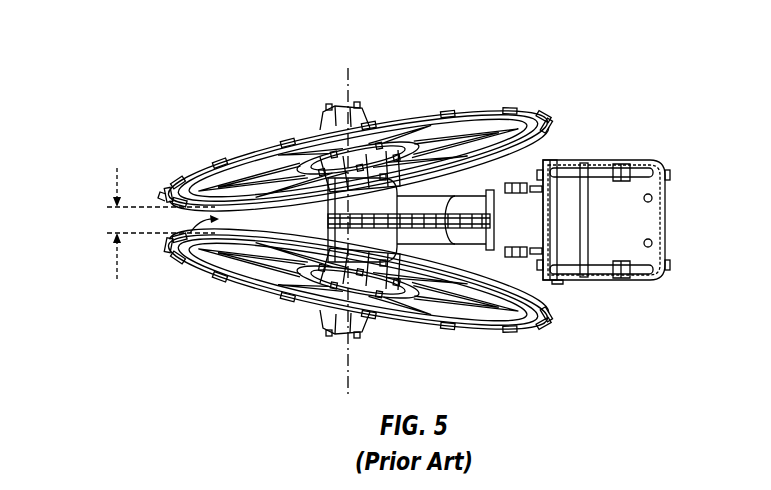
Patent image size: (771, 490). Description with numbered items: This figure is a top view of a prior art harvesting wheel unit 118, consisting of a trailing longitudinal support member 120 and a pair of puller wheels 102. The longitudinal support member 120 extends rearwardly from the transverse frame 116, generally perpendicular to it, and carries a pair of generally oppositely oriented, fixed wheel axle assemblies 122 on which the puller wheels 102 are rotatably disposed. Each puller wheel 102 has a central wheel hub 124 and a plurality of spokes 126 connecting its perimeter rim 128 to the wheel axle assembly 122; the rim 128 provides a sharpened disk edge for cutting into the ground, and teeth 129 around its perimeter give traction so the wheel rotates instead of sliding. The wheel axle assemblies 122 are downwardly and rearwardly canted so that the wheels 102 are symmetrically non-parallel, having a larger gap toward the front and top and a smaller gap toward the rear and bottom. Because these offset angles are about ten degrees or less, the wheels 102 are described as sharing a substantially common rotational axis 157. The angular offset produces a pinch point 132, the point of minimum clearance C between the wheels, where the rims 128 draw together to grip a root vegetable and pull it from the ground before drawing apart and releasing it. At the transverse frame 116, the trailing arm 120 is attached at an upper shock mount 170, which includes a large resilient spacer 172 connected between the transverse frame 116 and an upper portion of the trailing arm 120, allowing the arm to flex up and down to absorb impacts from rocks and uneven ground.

The harvesting wheel unit 118 is at (109, 69).
The minimum clearance C is at (117, 172).
The puller wheel 102 is at (452, 115).
The transverse frame 116 is at (622, 207).
The longitudinal support member 120 is at (448, 225).
The wheel axle assembly 122 is at (407, 192).
The central wheel hub 124 is at (330, 327).
The spokes 126 is at (262, 167).
The perimeter rim 128 is at (537, 132).
The teeth 129 is at (180, 180).
The pinch point 132 is at (182, 257).
The common rotational axis 157 is at (350, 88).
The shock mount 170 is at (577, 194).
The resilient spacer 172 is at (537, 215).